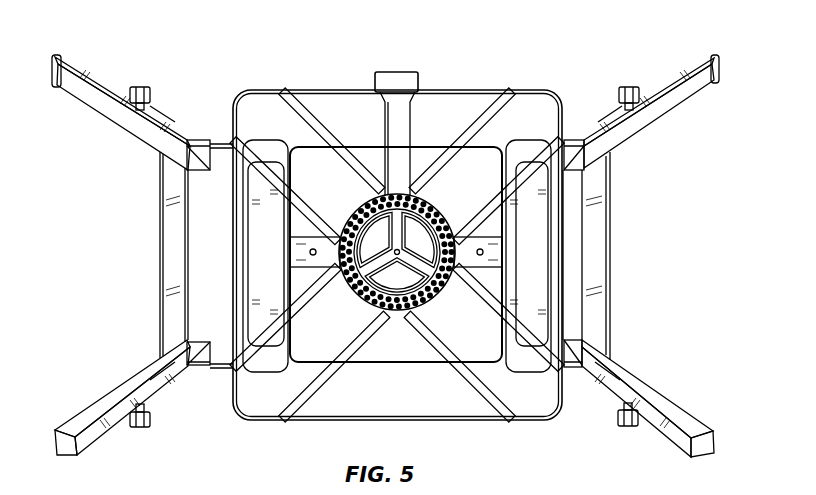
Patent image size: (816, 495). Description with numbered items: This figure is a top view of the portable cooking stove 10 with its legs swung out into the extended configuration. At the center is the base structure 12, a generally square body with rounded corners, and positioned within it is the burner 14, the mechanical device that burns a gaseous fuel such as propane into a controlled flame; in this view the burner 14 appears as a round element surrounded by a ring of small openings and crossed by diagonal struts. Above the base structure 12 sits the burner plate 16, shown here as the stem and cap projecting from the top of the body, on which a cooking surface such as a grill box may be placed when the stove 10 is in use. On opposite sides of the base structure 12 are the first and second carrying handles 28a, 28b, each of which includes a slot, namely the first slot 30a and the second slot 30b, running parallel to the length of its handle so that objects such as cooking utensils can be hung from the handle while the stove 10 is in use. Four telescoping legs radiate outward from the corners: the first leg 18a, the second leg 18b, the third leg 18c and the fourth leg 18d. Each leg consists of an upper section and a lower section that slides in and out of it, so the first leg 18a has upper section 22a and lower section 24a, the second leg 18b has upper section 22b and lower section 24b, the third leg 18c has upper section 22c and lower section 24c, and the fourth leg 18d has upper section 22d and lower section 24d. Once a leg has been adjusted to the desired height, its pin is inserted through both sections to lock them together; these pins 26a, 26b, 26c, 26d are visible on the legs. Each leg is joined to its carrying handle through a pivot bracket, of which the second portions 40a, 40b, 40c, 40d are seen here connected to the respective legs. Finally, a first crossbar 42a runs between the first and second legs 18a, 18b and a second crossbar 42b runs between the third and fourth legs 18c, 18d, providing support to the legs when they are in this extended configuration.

The stove 10 is at (388, 253).
The base structure 12 is at (366, 147).
The burner 14 is at (350, 212).
The burner plate 16 is at (348, 91).
The first leg 18a is at (661, 119).
The second leg 18b is at (660, 397).
The third leg 18c is at (114, 119).
The fourth leg 18d is at (114, 398).
The upper section 22a is at (626, 144).
The upper section 22b is at (628, 366).
The upper section 22c is at (144, 144).
The upper section 22d is at (146, 363).
The lower section 24a is at (696, 96).
The lower section 24b is at (696, 420).
The lower section 24c is at (71, 96).
The lower section 24d is at (75, 420).
The pin 26a is at (631, 86).
The pin 26b is at (631, 427).
The pin 26c is at (140, 86).
The pin 26d is at (138, 428).
The first carrying handle 28a is at (544, 253).
The second carrying handle 28b is at (238, 255).
The first slot 30a is at (584, 256).
The second slot 30b is at (199, 256).
The second portion 40a is at (576, 140).
The second portion 40b is at (577, 370).
The second portion 40c is at (196, 140).
The second portion 40d is at (195, 367).
The first crossbar 42a is at (611, 290).
The second crossbar 42b is at (184, 292).